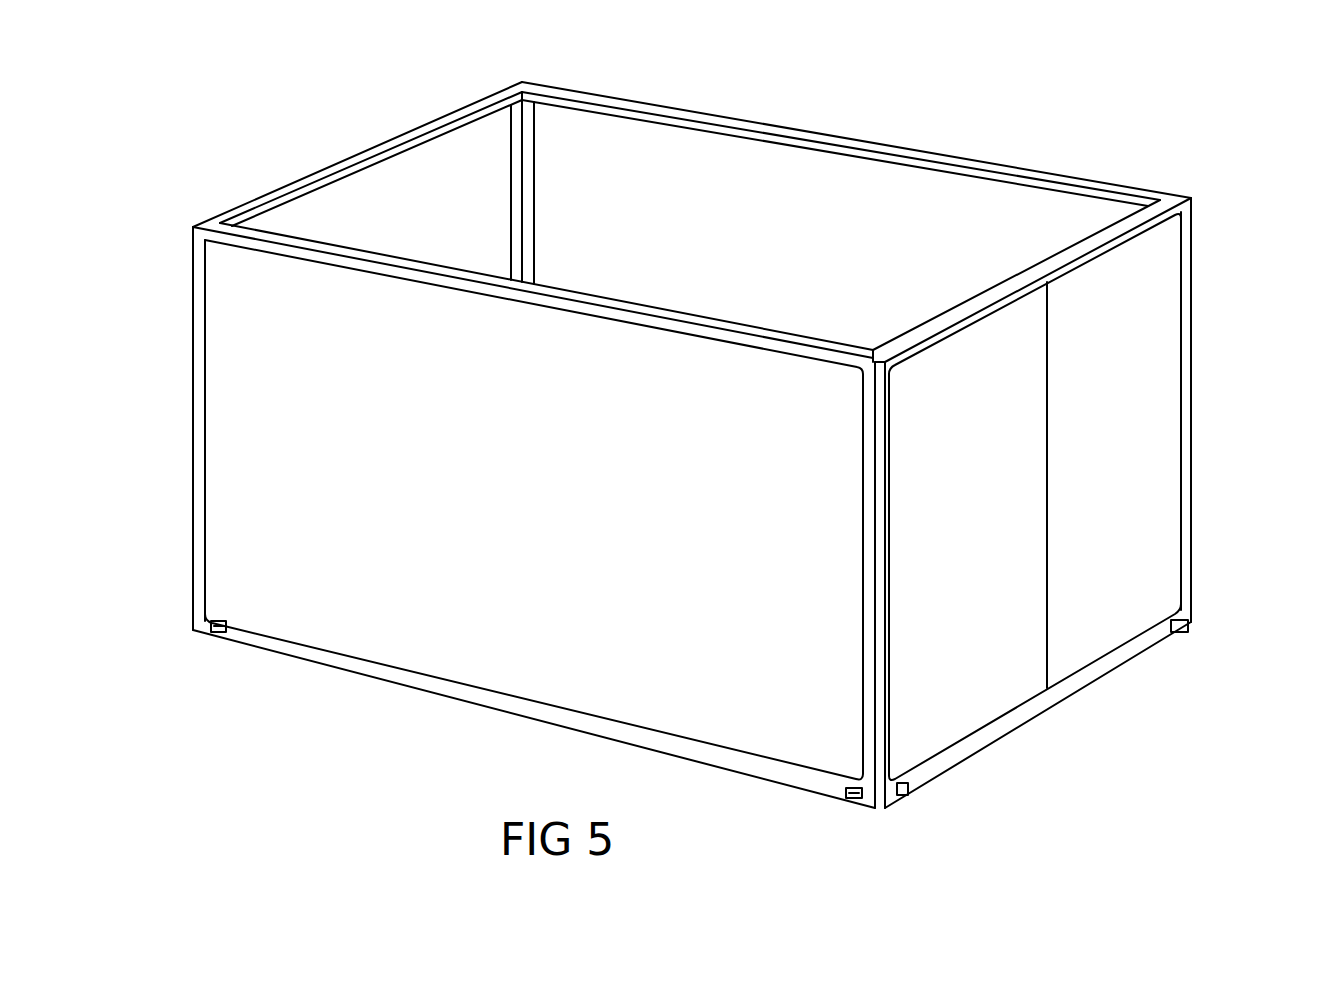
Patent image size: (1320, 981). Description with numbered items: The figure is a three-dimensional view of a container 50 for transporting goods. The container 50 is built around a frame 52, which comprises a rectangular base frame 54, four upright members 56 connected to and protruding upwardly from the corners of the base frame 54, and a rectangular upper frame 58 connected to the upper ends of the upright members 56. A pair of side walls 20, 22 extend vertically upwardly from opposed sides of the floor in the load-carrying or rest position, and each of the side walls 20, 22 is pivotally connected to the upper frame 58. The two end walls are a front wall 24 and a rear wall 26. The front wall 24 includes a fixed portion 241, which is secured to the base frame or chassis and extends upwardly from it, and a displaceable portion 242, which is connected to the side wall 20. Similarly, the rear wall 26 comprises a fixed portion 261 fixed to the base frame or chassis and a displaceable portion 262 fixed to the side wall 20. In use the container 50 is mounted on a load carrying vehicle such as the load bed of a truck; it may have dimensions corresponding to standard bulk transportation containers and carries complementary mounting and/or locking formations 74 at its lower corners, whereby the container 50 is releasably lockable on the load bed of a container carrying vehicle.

The container 50 is at (372, 44).
The side wall 20 is at (1005, 200).
The side wall 22 is at (262, 570).
The front wall 24 is at (300, 150).
The fixed portion 241 is at (345, 190).
The displaceable portion 242 is at (478, 130).
The rear wall 26 is at (1228, 523).
The fixed portion 261 is at (1000, 700).
The displaceable portion 262 is at (1143, 590).
The frame 52 is at (154, 218).
The base frame 54 is at (388, 708).
The upright members 56 is at (196, 470).
The upper frame 58 is at (908, 110).
The mounting and/or locking formations 74 is at (208, 638).